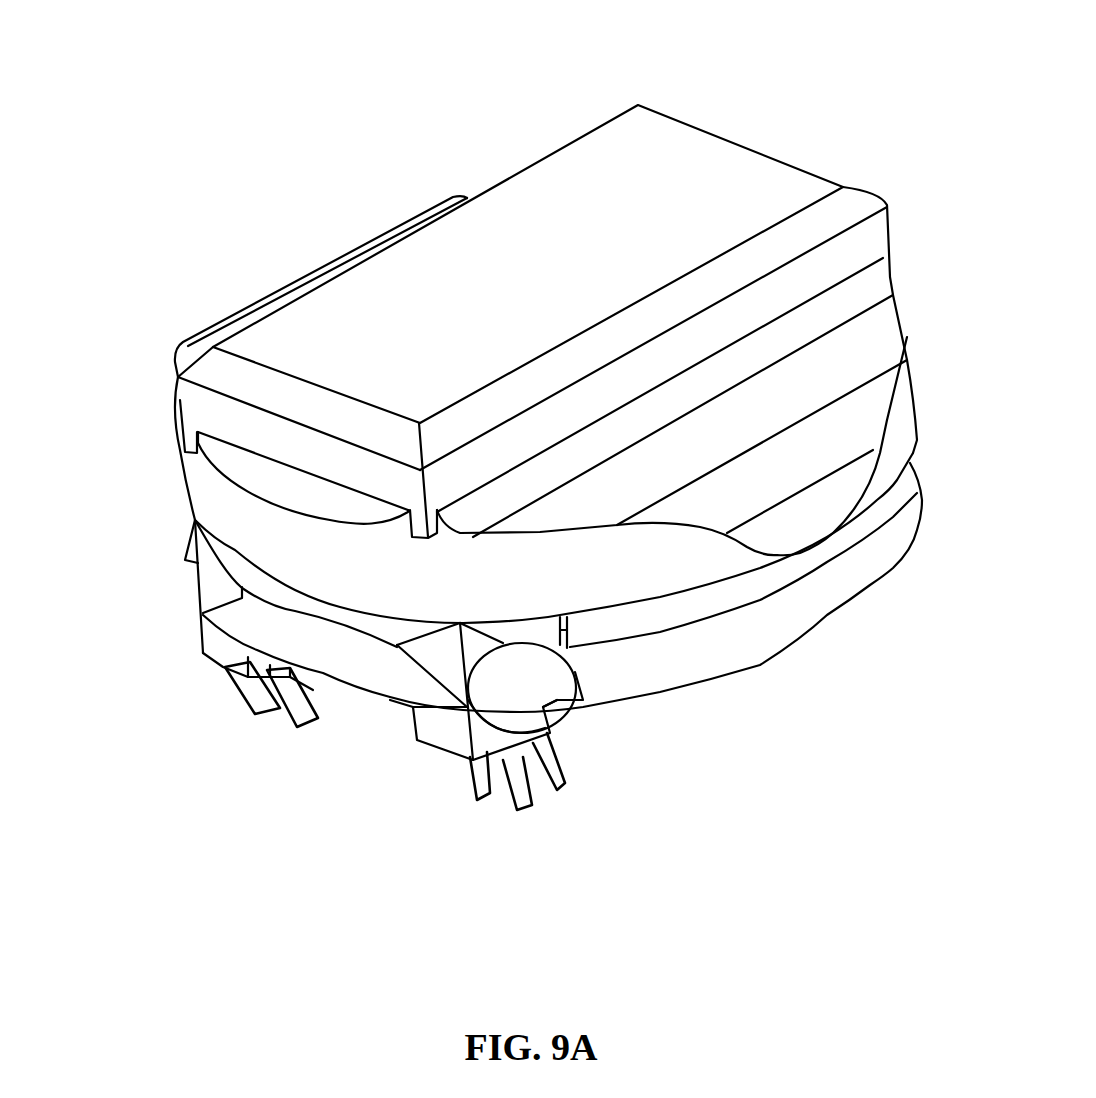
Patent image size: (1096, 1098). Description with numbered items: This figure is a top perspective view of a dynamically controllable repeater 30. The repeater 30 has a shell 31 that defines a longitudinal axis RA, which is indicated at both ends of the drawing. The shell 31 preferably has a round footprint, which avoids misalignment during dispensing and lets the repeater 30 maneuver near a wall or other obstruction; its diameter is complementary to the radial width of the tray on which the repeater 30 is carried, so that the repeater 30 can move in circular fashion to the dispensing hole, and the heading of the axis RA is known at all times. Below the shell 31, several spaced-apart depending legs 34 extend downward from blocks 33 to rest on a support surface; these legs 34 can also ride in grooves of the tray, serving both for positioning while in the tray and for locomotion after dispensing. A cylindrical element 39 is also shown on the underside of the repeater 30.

The repeater 30 is at (350, 162).
The shell 31 is at (543, 222).
The connector block 33 is at (222, 643).
The legs 34 is at (273, 703).
The cylindrical feedthrough 39 is at (523, 677).
The longitudinal axis RA is at (757, 130).